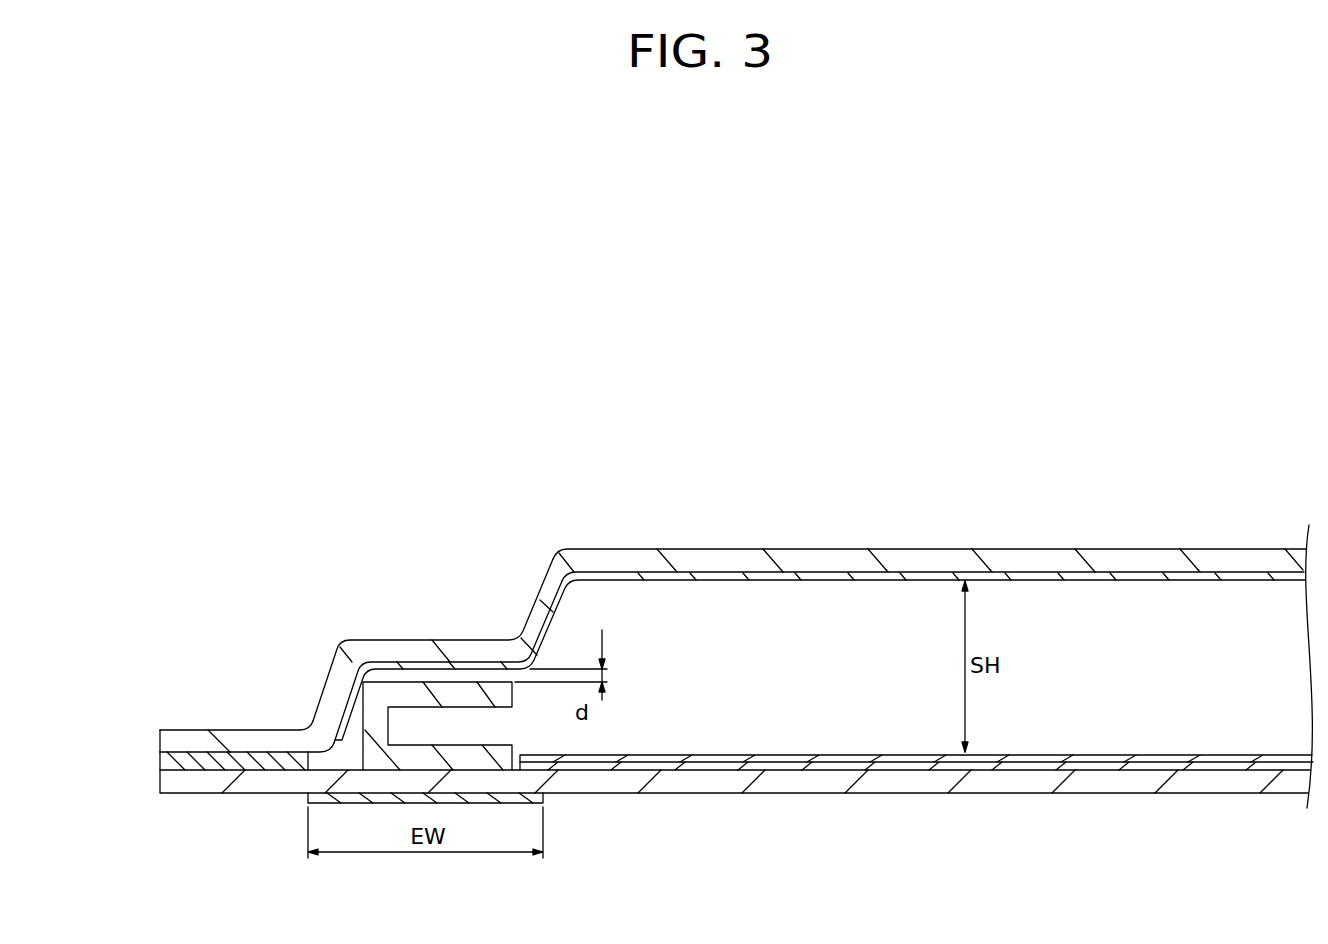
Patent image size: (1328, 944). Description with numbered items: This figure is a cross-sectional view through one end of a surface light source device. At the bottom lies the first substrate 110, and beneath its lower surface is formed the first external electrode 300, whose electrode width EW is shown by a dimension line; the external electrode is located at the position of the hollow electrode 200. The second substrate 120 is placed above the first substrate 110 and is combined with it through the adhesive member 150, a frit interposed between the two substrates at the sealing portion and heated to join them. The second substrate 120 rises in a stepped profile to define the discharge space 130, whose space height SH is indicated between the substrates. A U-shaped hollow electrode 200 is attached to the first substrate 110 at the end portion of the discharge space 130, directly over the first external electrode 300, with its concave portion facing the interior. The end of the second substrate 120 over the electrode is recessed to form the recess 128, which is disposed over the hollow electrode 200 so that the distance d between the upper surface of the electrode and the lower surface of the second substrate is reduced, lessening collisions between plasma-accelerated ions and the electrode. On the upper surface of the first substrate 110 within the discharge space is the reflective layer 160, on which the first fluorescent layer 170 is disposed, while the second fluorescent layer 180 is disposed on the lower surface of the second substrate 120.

The first substrate 110 is at (165, 781).
The second substrate 120 is at (165, 743).
The recess 128 is at (470, 650).
The discharge space 130 is at (880, 608).
The adhesive member 150 is at (165, 763).
The reflective layer 160 is at (679, 757).
The first fluorescent layer 170 is at (765, 766).
The second fluorescent layer 180 is at (795, 576).
The hollow electrode 200 is at (386, 695).
The first external electrode 300 is at (523, 802).